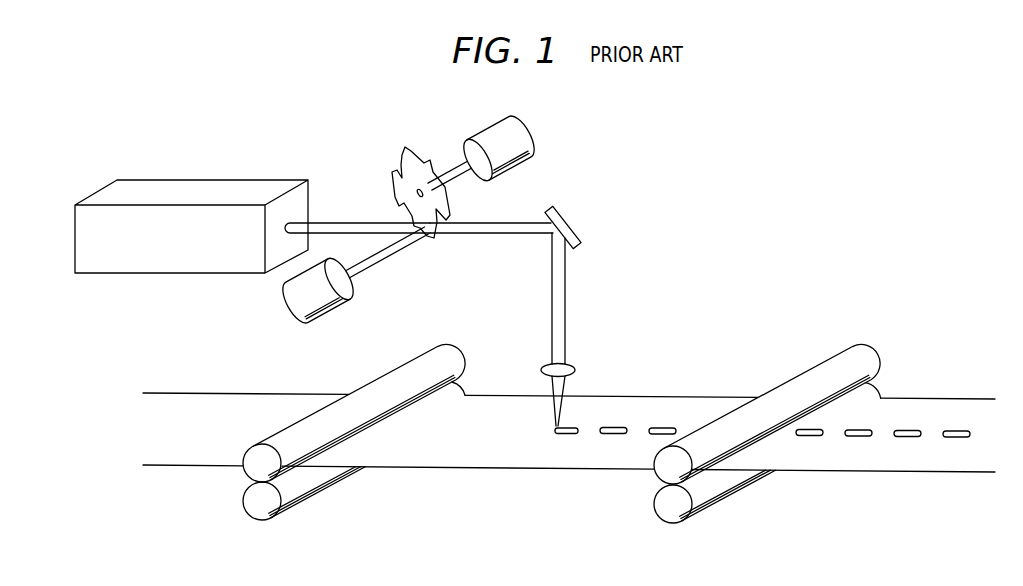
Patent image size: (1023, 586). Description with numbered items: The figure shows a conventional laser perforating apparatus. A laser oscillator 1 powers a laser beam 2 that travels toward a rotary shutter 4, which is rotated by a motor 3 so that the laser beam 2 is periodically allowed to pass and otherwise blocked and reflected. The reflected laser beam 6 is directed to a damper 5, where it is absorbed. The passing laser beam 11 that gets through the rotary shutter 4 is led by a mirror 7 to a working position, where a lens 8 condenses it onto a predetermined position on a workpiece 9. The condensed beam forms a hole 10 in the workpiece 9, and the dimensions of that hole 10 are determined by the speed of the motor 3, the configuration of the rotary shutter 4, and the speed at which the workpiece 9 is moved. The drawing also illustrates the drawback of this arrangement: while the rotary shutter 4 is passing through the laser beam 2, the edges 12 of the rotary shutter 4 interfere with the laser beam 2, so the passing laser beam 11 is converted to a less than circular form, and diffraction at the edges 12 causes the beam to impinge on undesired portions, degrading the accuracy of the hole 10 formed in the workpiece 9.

The laser oscillator 1 is at (252, 180).
The laser beam 2 is at (350, 222).
The motor 3 is at (523, 127).
The rotary shutter 4 is at (423, 146).
The damper 5 is at (331, 310).
The reflected laser beam 6 is at (392, 260).
The mirror 7 is at (574, 216).
The lens 8 is at (575, 369).
The workpiece 9 is at (676, 393).
The hole 10 is at (560, 437).
The passing laser beam 11 is at (499, 222).
The edges 12 is at (389, 166).